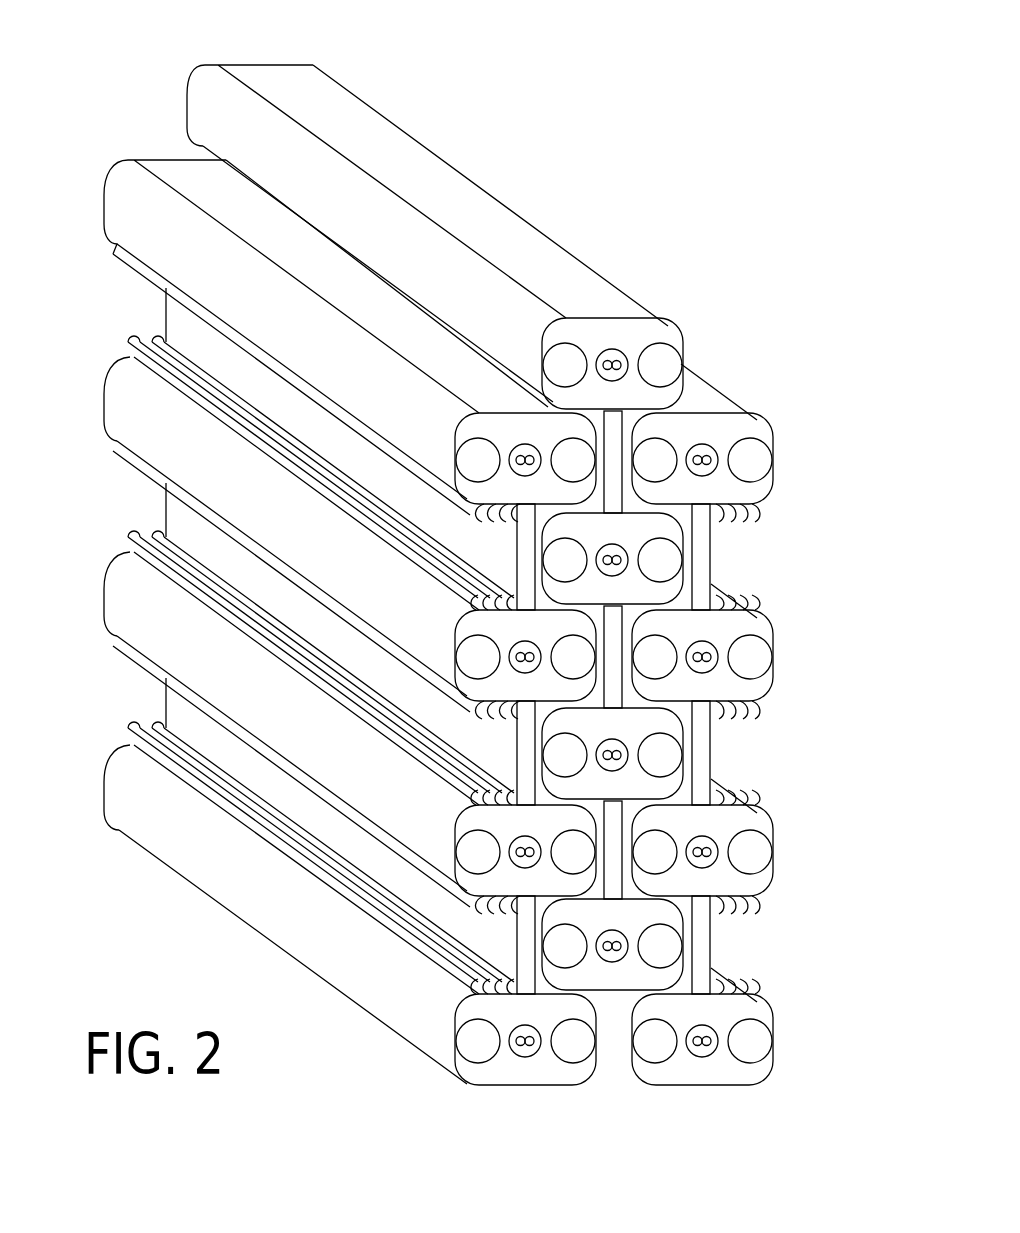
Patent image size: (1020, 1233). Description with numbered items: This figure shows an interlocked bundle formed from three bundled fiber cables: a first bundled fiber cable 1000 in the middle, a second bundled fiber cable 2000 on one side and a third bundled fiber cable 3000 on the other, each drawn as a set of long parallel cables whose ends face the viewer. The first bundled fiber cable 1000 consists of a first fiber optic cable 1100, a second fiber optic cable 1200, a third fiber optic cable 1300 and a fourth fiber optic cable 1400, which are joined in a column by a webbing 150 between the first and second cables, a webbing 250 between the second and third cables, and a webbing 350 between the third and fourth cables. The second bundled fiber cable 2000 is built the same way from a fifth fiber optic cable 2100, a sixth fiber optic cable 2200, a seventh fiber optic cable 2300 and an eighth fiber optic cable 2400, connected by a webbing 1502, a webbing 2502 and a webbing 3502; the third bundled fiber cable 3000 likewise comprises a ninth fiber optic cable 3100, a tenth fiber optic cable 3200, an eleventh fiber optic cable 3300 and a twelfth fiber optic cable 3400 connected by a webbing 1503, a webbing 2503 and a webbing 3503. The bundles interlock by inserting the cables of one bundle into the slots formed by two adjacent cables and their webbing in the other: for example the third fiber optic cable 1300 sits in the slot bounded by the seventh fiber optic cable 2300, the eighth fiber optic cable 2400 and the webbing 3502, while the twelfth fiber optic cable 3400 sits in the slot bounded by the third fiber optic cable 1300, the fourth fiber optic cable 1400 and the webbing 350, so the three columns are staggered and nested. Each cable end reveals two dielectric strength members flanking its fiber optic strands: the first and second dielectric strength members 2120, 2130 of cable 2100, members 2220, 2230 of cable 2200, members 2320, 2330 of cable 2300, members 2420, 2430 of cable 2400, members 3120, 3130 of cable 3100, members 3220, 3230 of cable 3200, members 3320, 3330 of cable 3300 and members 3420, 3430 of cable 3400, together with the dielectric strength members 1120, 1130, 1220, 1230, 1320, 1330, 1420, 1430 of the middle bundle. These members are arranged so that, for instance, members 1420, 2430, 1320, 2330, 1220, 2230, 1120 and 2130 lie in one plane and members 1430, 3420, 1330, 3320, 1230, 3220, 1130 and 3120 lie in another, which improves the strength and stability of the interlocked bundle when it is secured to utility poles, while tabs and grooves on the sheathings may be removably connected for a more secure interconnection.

The first bundled fiber cable 1000 is at (387, 118).
The second bundled fiber cable 2000 is at (172, 160).
The third bundled fiber cable 3000 is at (723, 393).
The fourth fiber optic cable 1400 is at (612, 363).
The dielectric strength member 1420 is at (565, 365).
The dielectric strength member 1430 is at (660, 365).
The third fiber optic cable 1300 is at (612, 558).
The dielectric strength member 1320 is at (565, 560).
The dielectric strength member 1330 is at (660, 560).
The second fiber optic cable 1200 is at (612, 753).
The dielectric strength member 1220 is at (565, 755).
The dielectric strength member 1230 is at (660, 755).
The first fiber optic cable 1100 is at (612, 944).
The dielectric strength member 1120 is at (565, 946).
The dielectric strength member 1130 is at (660, 946).
The eighth fiber optic cable 2400 is at (525, 467).
The first dielectric strength member 2420 is at (478, 460).
The second dielectric strength member 2430 is at (573, 460).
The seventh fiber optic cable 2300 is at (350, 527).
The first dielectric strength member 2320 is at (478, 657).
The second dielectric strength member 2330 is at (573, 657).
The sixth fiber optic cable 2200 is at (350, 722).
The first dielectric strength member 2220 is at (478, 852).
The second dielectric strength member 2230 is at (573, 852).
The fifth fiber optic cable 2100 is at (350, 903).
The first dielectric strength member 2120 is at (478, 1041).
The second dielectric strength member 2130 is at (573, 1041).
The twelfth fiber optic cable 3400 is at (702, 467).
The first dielectric strength member 3420 is at (655, 460).
The second dielectric strength member 3430 is at (750, 460).
The eleventh fiber optic cable 3300 is at (702, 651).
The first dielectric strength member 3320 is at (655, 657).
The second dielectric strength member 3330 is at (750, 657).
The tenth fiber optic cable 3200 is at (702, 846).
The first dielectric strength member 3220 is at (655, 852).
The second dielectric strength member 3230 is at (750, 852).
The ninth fiber optic cable 3100 is at (702, 1026).
The first dielectric strength member 3120 is at (655, 1041).
The second dielectric strength member 3130 is at (750, 1041).
The webbing 350 is at (612, 463).
The webbing 250 is at (612, 658).
The webbing 150 is at (610, 848).
The webbing 3502 is at (158, 314).
The webbing 2502 is at (158, 524).
The webbing 1502 is at (158, 704).
The webbing 3503 is at (700, 558).
The webbing 2503 is at (703, 750).
The webbing 1503 is at (700, 943).